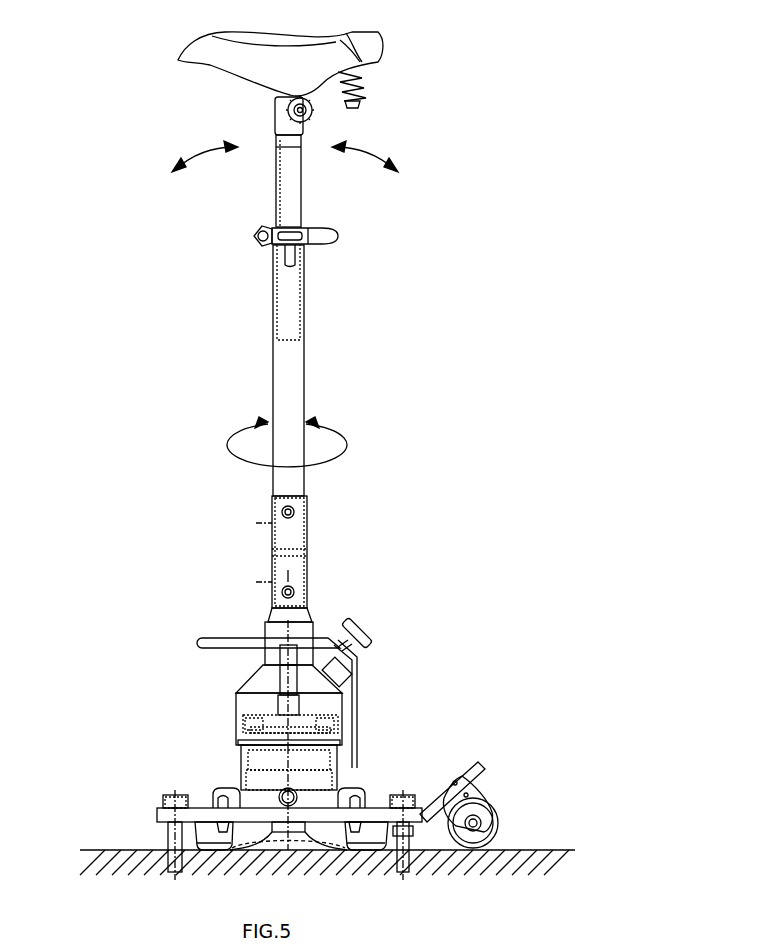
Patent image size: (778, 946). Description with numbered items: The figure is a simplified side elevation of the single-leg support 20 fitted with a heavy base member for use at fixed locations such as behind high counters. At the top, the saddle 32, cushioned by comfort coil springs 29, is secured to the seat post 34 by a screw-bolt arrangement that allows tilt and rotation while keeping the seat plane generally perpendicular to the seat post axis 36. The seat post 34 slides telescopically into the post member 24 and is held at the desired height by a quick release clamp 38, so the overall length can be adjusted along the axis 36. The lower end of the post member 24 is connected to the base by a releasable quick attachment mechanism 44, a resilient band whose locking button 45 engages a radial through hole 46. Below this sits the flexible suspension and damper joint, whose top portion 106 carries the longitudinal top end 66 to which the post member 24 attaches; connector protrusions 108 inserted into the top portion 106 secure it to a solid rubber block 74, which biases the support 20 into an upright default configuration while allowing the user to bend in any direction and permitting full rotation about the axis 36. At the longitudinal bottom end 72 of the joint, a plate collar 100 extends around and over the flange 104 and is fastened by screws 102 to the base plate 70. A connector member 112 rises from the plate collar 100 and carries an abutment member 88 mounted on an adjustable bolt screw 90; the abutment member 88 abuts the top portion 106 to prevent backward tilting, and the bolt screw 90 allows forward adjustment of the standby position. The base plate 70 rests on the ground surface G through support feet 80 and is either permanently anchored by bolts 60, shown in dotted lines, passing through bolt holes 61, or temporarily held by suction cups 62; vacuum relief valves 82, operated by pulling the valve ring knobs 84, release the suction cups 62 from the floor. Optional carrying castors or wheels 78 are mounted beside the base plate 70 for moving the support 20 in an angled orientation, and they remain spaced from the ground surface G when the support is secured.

The single-leg support 20 is at (92, 150).
The saddle 32 is at (370, 45).
The comfort coil springs 29 is at (362, 78).
The seat post 34 is at (303, 188).
The seat post axis 36 is at (283, 182).
The quick release clamp 38 is at (330, 245).
The post member 24 is at (300, 366).
The releasable quick attachment mechanism 44 is at (308, 552).
The locking button 45 is at (296, 514).
The radial through hole 46 is at (296, 593).
The longitudinal top end 66 is at (265, 640).
The adjustable bolt screw 90 is at (370, 632).
The connector member 112 is at (358, 668).
The abutment member 88 is at (346, 686).
The top portion 106 is at (238, 697).
The connector protrusions 108 is at (240, 725).
The plate collar 100 is at (248, 746).
The solid rubber block 74 is at (337, 772).
The bolts 60 is at (170, 805).
The longitudinal bottom end 72 is at (360, 792).
The valve ring knobs 84 is at (280, 792).
The flange 104 is at (224, 790).
The screws 102 is at (220, 815).
The support feet 80 is at (180, 828).
The bolt holes 61 is at (165, 800).
The vacuum relief valves 82 is at (240, 848).
The suction cups 62 is at (322, 848).
The base plate 70 is at (430, 820).
The carrying castors or wheels 78 is at (496, 825).
The ground surface G is at (530, 850).